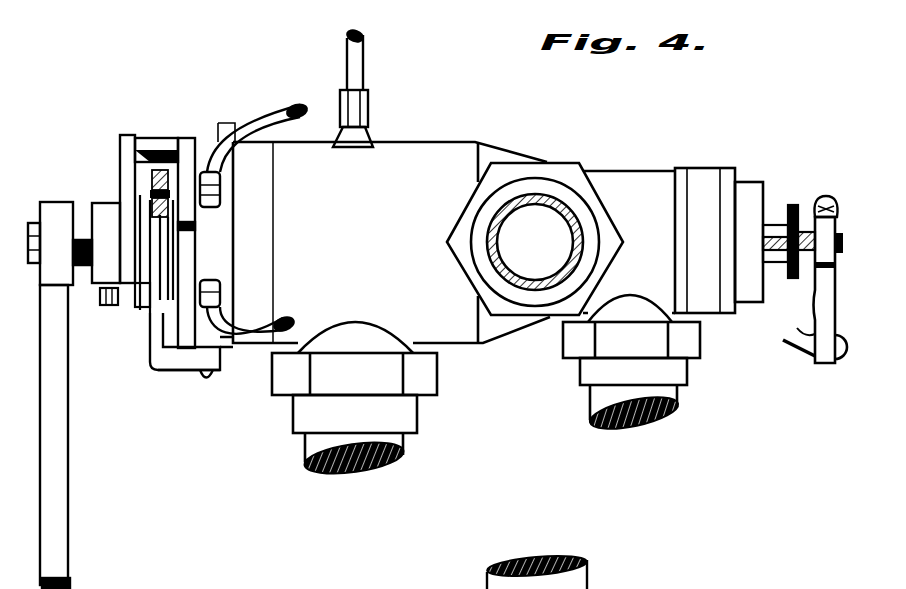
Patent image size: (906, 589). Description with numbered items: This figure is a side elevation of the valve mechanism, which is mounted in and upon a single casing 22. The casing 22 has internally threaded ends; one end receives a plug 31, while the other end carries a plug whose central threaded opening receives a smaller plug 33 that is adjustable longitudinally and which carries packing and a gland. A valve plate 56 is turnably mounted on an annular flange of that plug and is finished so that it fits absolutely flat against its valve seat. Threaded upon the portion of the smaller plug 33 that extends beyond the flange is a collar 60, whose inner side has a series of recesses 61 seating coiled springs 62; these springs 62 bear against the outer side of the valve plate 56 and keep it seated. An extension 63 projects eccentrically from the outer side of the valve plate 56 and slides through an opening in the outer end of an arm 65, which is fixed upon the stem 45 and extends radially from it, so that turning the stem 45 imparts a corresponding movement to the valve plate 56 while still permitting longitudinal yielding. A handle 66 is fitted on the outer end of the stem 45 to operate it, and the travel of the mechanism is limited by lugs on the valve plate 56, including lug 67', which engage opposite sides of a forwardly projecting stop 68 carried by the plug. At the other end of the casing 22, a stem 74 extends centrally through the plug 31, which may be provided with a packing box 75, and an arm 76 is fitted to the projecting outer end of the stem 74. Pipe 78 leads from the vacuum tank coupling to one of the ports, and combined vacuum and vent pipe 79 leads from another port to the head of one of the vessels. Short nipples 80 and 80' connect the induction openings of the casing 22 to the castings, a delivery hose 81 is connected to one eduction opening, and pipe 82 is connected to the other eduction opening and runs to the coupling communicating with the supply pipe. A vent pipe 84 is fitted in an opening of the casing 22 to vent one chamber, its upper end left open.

The casing 22 is at (446, 233).
The plug 31 is at (750, 304).
The smaller plug 33 is at (150, 292).
The stem 45 is at (82, 203).
The valve plate 56 is at (190, 262).
The collar 60 is at (155, 340).
The recesses 61 is at (152, 177).
The coiled springs 62 is at (152, 195).
The extension 63 is at (152, 138).
The arm 65 is at (123, 133).
The handle 66 is at (68, 545).
The lug 67' is at (228, 225).
The stop 68 is at (181, 368).
The stem 74 is at (803, 232).
The packing box 75 is at (773, 225).
The arm 76 is at (815, 298).
The pipe 78 is at (255, 118).
The combined vacuum and vent pipe 79 is at (258, 347).
The nipple 80 is at (535, 239).
The nipple 80' is at (565, 571).
The delivery hose 81 is at (305, 452).
The pipe 82 is at (677, 405).
The vent pipe 84 is at (363, 70).